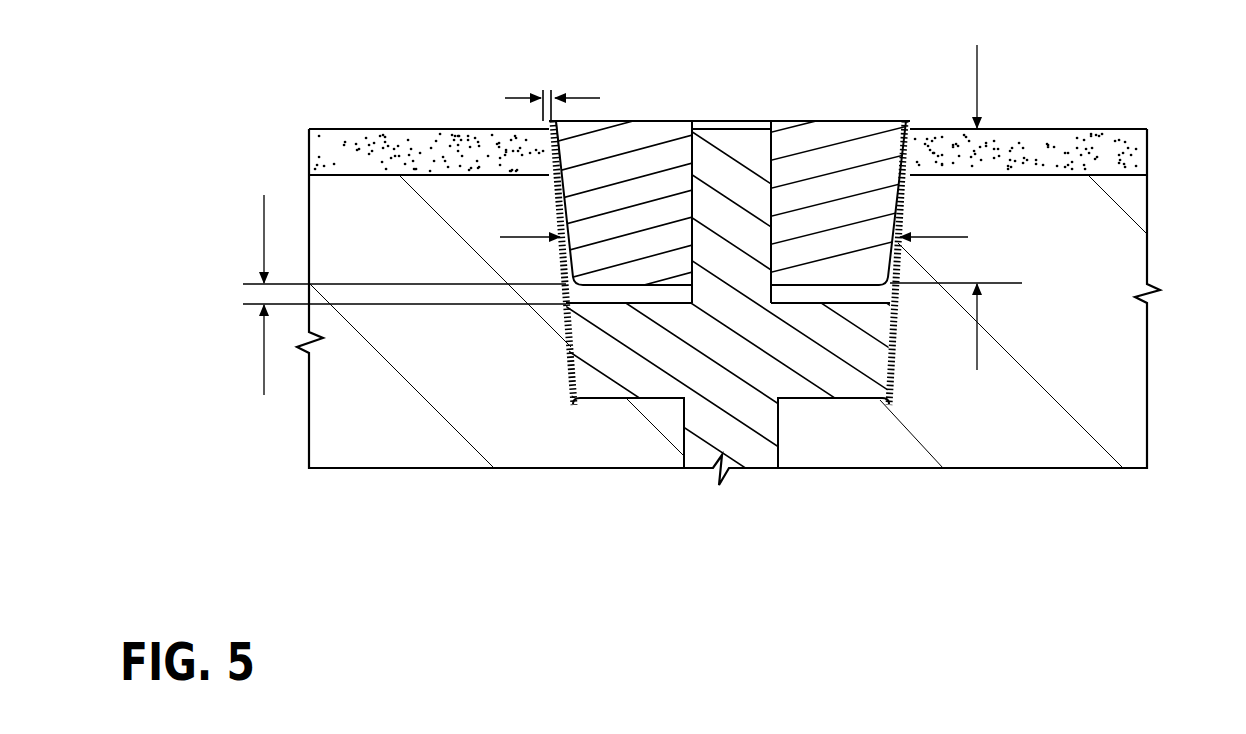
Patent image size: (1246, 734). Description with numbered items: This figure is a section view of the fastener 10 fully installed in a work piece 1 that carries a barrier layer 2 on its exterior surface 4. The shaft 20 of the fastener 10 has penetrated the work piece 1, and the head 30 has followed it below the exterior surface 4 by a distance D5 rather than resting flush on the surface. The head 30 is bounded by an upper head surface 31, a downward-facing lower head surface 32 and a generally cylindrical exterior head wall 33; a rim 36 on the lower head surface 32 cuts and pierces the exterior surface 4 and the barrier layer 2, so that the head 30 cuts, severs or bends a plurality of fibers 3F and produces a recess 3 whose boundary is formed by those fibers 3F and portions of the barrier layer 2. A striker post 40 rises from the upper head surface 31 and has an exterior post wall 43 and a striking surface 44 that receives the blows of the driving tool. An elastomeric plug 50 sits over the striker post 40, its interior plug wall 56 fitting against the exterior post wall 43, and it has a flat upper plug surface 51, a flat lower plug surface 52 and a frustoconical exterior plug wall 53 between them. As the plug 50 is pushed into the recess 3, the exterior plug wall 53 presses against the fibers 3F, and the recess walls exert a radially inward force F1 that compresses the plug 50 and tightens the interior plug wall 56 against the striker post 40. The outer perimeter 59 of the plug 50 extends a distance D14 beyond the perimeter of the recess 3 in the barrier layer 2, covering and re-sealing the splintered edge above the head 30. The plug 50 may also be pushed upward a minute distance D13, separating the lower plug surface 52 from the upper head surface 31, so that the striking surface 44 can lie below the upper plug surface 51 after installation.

The work piece 1 is at (1090, 249).
The barrier layer 2 is at (1013, 127).
The recess 3 is at (893, 207).
The fibers 3F is at (547, 186).
The exterior surface 4 is at (1078, 128).
The fastener 10 is at (597, 406).
The shaft 20 is at (750, 440).
The head 30 is at (893, 368).
The upper head surface 31 is at (812, 305).
The lower head surface 32 is at (843, 398).
The exterior head wall 33 is at (893, 400).
The rim 36 is at (885, 400).
The striker post 40 is at (740, 185).
The exterior post wall 43 is at (690, 200).
The striking surface 44 is at (727, 128).
The plug 50 is at (910, 119).
The upper plug surface 51 is at (843, 121).
The lower plug surface 52 is at (815, 275).
The exterior plug wall 53 is at (876, 121).
The interior plug wall 56 is at (703, 128).
The outer perimeter 59 is at (575, 122).
The distance D5 is at (977, 71).
The distance D13 is at (629, 311).
The distance D14 is at (523, 102).
The force F1 is at (735, 237).